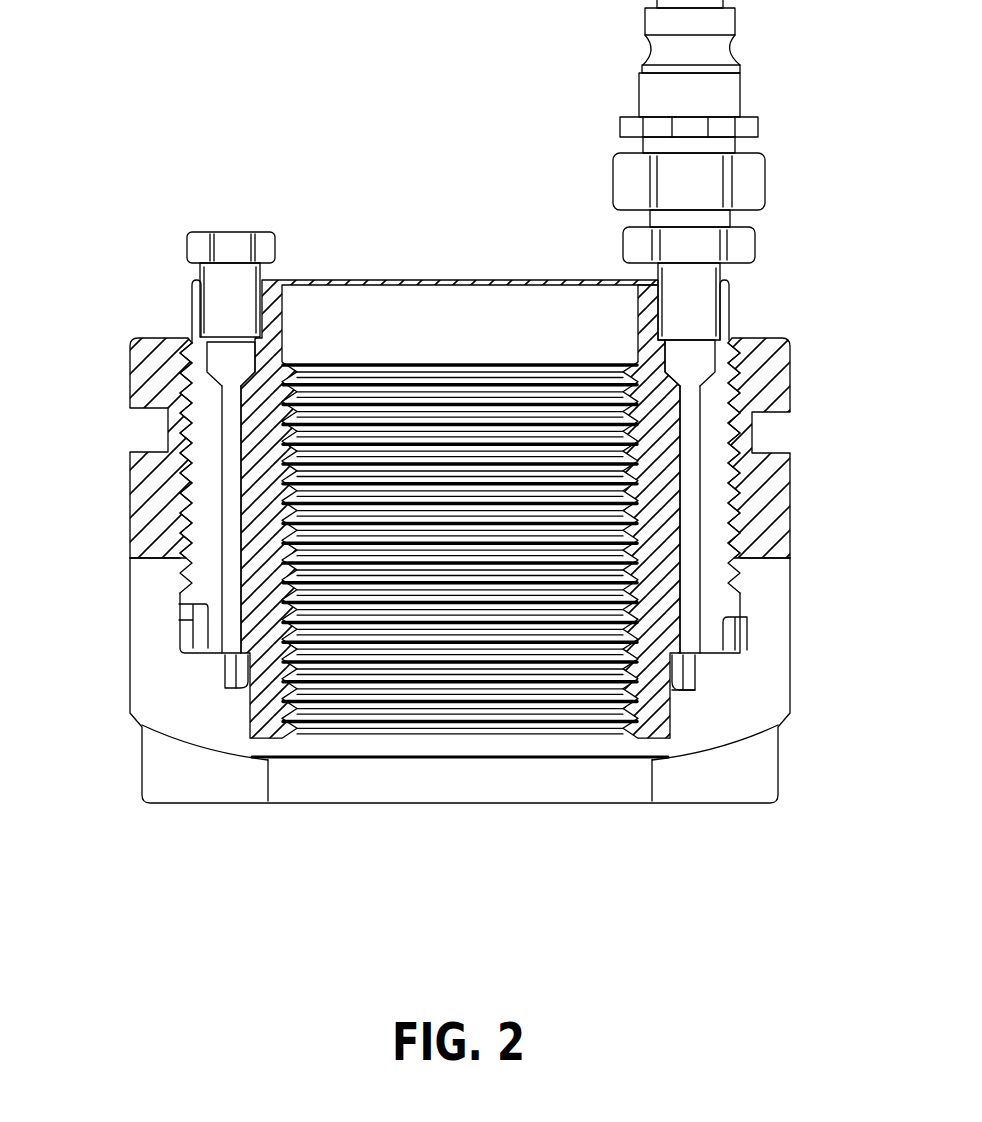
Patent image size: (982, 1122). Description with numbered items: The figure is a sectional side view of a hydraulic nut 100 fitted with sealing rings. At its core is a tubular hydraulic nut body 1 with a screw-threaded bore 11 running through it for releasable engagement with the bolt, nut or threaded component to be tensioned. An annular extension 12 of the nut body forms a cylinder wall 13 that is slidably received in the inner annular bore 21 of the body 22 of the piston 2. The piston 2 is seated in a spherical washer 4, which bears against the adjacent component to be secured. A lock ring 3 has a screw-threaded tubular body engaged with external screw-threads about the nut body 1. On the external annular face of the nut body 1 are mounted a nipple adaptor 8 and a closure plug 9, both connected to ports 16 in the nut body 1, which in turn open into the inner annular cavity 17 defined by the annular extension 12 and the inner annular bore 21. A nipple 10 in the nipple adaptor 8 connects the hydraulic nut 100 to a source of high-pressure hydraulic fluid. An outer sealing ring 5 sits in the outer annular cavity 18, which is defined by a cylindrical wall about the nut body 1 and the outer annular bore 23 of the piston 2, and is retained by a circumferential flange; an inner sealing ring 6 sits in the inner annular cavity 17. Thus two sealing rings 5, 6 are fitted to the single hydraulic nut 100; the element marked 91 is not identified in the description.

The hydraulic nut 100 is at (435, 150).
The nipple 10 is at (711, 97).
The nipple adaptor 8 is at (743, 245).
The closure plug 9 is at (233, 247).
The ports 16 is at (227, 407).
The screw-threaded bore 11 is at (500, 376).
The lock ring 3 is at (777, 392).
The hydraulic nut body 1 is at (721, 525).
The outer sealing ring 5 is at (735, 557).
The outer annular cavity 18 is at (740, 620).
The inner annular bore 21 is at (690, 665).
The inner sealing ring 6 is at (693, 667).
The outer annular bore 23 is at (700, 684).
The piston 2 is at (786, 722).
The body of the piston 22 is at (210, 726).
The spherical washer 4 is at (737, 788).
The seal 91 is at (207, 625).
The cylinder wall 13 is at (253, 730).
The annular extension 12 is at (270, 735).
The inner annular cavity 17 is at (677, 692).